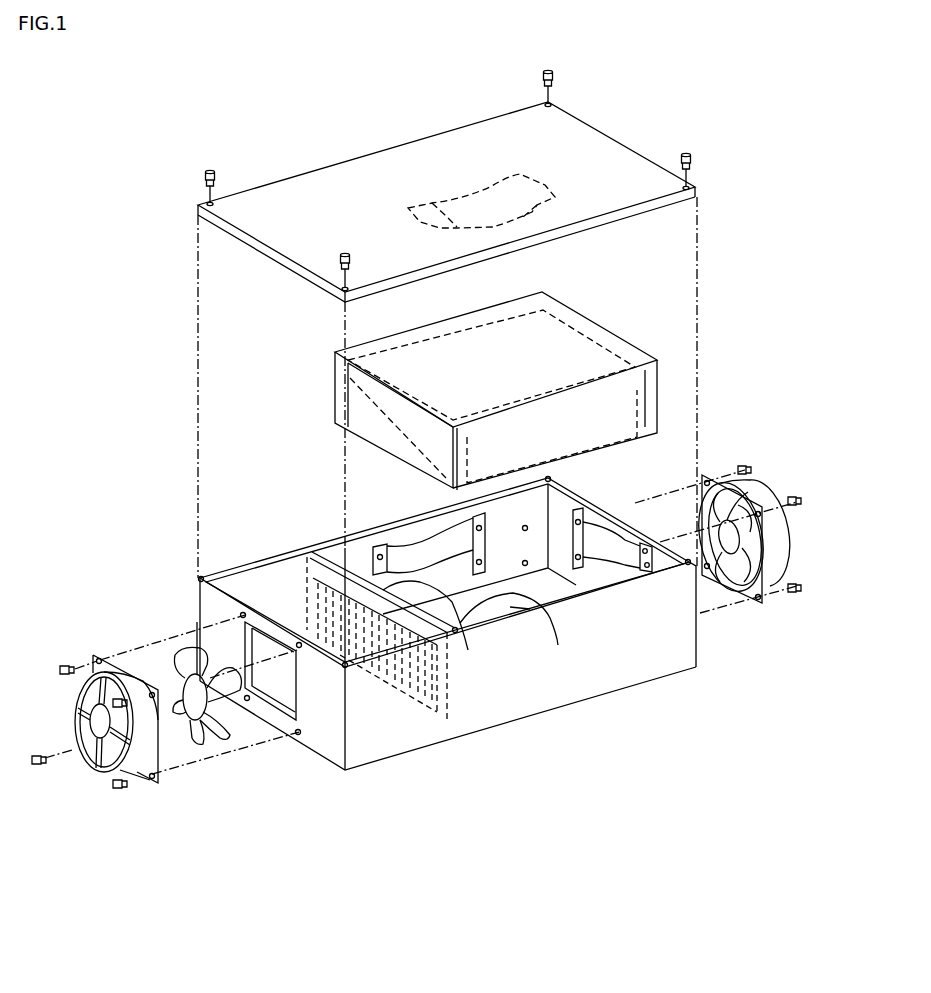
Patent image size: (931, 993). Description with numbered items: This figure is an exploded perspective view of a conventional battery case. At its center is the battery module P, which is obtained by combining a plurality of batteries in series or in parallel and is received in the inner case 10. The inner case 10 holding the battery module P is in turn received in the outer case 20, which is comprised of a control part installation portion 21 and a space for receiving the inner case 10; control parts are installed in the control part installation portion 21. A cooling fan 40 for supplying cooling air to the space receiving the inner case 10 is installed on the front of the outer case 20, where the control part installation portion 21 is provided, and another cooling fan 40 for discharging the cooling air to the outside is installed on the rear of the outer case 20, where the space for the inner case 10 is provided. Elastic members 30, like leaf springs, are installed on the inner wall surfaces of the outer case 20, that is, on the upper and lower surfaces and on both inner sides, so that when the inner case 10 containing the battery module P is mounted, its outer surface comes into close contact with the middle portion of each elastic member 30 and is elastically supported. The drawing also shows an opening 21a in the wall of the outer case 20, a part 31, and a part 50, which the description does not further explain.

The inner case 10 is at (568, 306).
The outer case 20 is at (650, 668).
The control part installation portion 21 is at (313, 543).
The opening 21a is at (245, 642).
The elastic member 30 is at (535, 230).
The guide plate 31 is at (429, 530).
The cooling fan 40 is at (753, 494).
The partition plate 50 is at (295, 606).
The battery module P is at (607, 347).